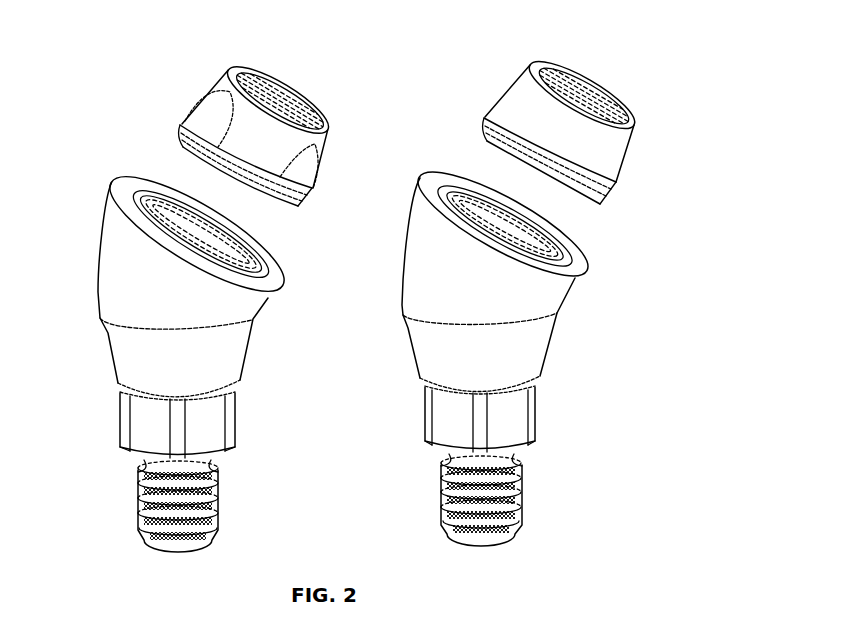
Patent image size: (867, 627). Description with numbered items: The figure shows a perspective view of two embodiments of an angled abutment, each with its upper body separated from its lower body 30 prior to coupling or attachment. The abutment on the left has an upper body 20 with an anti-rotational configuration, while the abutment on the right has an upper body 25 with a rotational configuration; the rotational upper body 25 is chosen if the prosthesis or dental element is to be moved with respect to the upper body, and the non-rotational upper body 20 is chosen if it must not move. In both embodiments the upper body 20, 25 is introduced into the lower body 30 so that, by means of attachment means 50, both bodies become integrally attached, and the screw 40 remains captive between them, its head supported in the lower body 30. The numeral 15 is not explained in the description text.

The threaded opening of cap 15 is at (610, 88).
The upper body with an anti-rotational configuration 20 is at (208, 110).
The upper body with a rotational configuration 25 is at (522, 108).
The lower body 30 is at (118, 298).
The screw 40 is at (150, 513).
The attachment means 50 is at (157, 212).